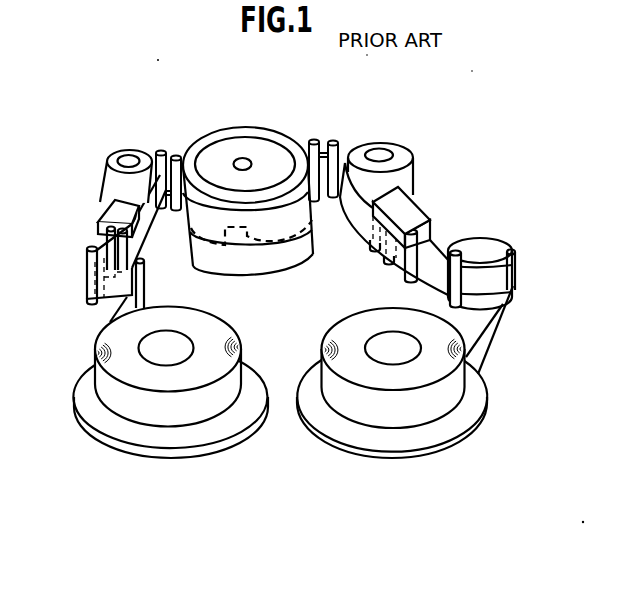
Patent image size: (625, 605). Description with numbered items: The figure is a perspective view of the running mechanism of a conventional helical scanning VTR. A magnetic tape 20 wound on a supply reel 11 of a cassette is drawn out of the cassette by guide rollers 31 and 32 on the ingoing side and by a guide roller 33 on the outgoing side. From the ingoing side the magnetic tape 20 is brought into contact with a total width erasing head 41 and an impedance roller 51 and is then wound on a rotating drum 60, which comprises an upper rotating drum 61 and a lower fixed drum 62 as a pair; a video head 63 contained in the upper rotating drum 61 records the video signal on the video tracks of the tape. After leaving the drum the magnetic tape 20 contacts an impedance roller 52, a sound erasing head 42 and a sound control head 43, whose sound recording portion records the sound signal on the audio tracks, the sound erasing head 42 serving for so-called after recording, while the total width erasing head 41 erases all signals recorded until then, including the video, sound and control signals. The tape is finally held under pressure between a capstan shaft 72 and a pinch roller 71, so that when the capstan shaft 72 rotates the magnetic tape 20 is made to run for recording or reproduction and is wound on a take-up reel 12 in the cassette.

The supply reel 11 is at (160, 438).
The take-up reel 12 is at (398, 440).
The magnetic tape 20 is at (110, 293).
The guide roller 31 is at (90, 247).
The guide roller 32 is at (163, 151).
The guide roller 33 is at (337, 141).
The total width erasing head 41 is at (102, 212).
The sound erasing head 42 is at (402, 198).
The sound control head 43 is at (416, 217).
The impedance roller 51 is at (112, 150).
The impedance roller 52 is at (405, 143).
The rotating drum 60 is at (273, 196).
The upper rotating drum 61 is at (216, 128).
The lower fixed drum 62 is at (297, 244).
The video head 63 is at (247, 236).
The pinch roller 71 is at (497, 240).
The capstan shaft 72 is at (457, 283).